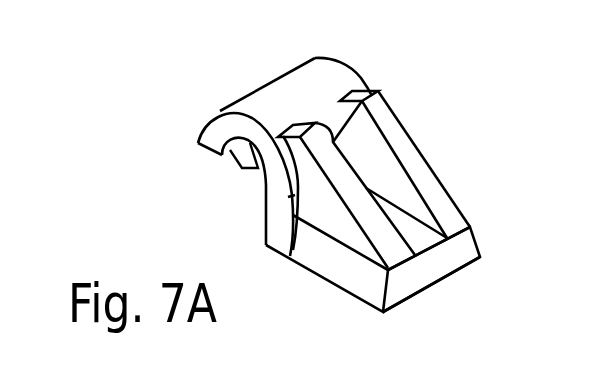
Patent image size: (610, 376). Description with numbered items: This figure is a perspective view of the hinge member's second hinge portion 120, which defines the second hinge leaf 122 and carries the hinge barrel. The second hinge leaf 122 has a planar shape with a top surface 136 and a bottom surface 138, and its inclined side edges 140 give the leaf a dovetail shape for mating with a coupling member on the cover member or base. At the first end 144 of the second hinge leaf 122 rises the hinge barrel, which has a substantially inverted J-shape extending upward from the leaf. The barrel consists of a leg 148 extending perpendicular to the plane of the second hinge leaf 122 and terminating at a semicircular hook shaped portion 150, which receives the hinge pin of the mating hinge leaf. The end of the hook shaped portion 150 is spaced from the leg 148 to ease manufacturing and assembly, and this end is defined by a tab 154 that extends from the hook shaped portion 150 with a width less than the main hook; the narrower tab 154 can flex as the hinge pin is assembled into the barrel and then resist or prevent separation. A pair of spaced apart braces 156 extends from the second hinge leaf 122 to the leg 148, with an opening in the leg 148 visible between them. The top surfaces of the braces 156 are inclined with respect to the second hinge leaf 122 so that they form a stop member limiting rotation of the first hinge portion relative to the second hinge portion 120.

The second hinge portion 120 is at (395, 105).
The second hinge leaf 122 is at (453, 255).
The top surface 136 is at (406, 238).
The bottom surface 138 is at (404, 300).
The inclined side edges 140 is at (340, 273).
The first end 144 is at (308, 240).
The leg 148 is at (275, 227).
The hook shaped portion 150 is at (215, 128).
The tab 154 is at (243, 170).
The braces 156 is at (413, 167).